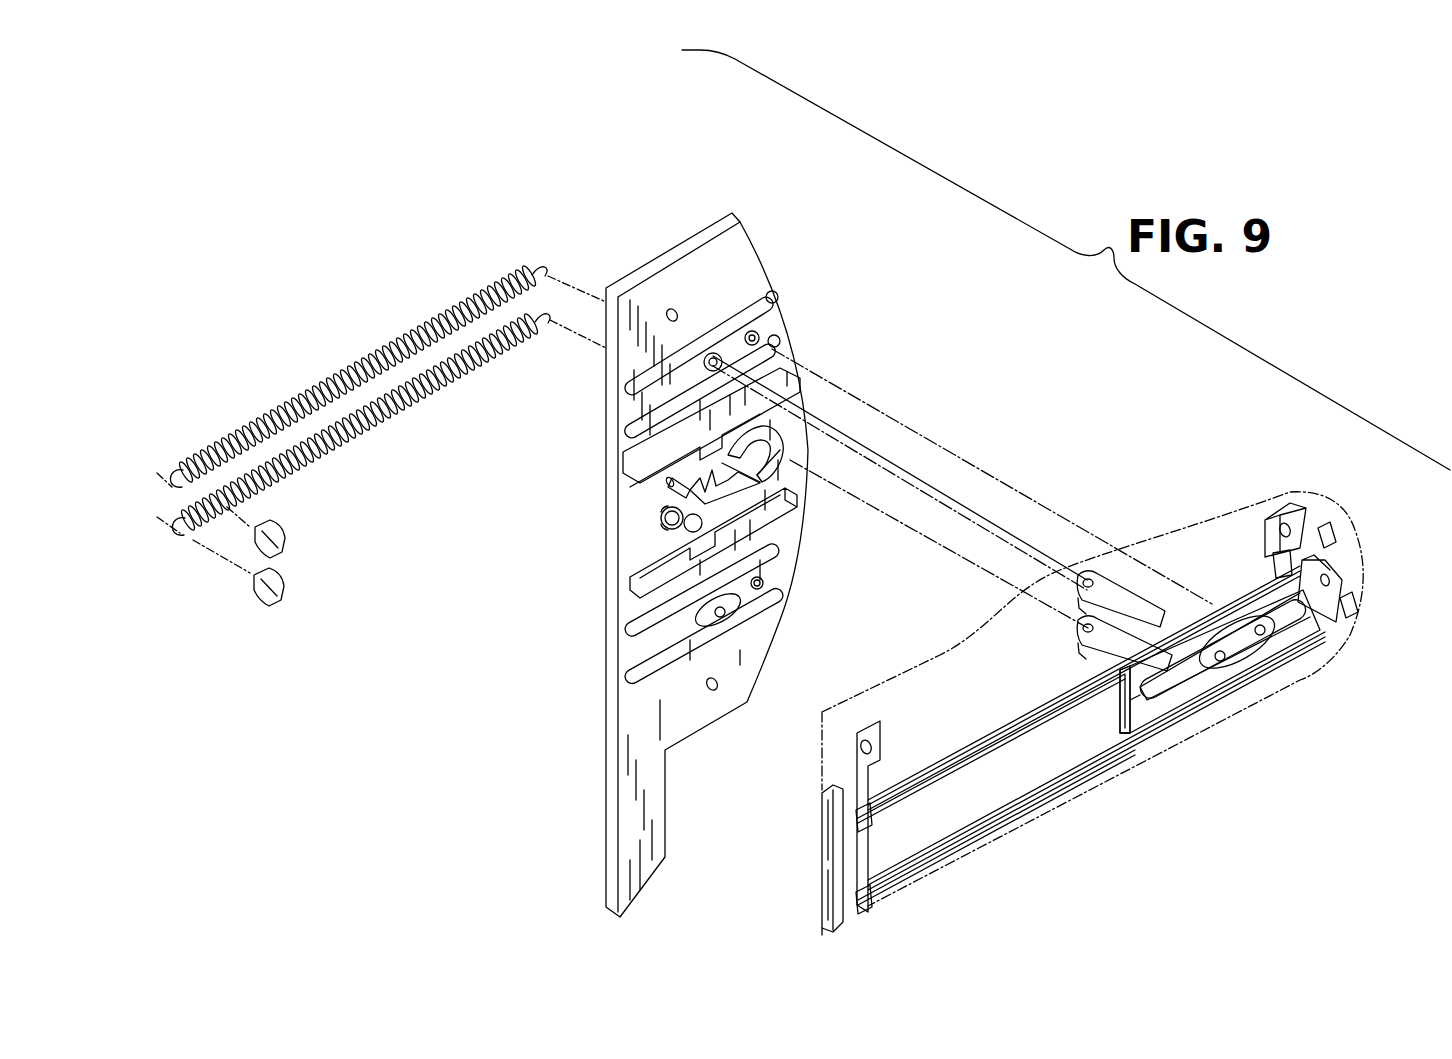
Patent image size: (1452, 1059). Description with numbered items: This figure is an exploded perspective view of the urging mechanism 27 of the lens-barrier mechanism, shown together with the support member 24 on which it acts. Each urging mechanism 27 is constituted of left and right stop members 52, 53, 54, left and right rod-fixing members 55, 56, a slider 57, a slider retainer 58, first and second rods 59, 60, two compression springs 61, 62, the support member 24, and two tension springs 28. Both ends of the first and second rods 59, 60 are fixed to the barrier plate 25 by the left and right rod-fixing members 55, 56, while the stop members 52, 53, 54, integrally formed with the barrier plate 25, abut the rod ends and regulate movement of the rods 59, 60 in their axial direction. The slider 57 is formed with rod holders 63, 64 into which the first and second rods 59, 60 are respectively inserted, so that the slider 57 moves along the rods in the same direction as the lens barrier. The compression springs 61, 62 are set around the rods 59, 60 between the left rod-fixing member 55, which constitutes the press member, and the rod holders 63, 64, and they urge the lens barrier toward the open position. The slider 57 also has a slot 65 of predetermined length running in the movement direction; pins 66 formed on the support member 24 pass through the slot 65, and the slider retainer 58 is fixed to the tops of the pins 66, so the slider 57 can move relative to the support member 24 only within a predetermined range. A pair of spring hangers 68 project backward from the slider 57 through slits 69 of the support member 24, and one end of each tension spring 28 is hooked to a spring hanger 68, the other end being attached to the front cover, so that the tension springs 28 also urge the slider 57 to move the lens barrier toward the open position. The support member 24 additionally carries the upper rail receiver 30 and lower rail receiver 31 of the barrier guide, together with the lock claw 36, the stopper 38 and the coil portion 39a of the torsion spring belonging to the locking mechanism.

The support member 24 is at (766, 249).
The barrier plate 25 is at (1160, 755).
The urging mechanism 27 is at (1187, 572).
The tension spring 28 is at (420, 335).
The upper rail receiver 30 is at (805, 388).
The lower rail receiver 31 is at (800, 505).
The lock claw 36 is at (790, 440).
The stopper 38 is at (672, 498).
The coil portion 39a is at (684, 528).
The stop member 52 is at (822, 812).
The stop member 53 is at (1340, 538).
The stop member 54 is at (1360, 606).
The left rod-fixing member 55 is at (873, 728).
The right rod-fixing member 56 is at (1290, 500).
The slider 57 is at (1118, 706).
The slider retainer 58 is at (1265, 665).
The first rod 59 is at (933, 764).
The second rod 60 is at (1010, 808).
The compression spring 61 is at (982, 728).
The compression spring 62 is at (1070, 788).
The rod holder 63 is at (1270, 540).
The rod holder 64 is at (1320, 635).
The slot 65 is at (1208, 690).
The pin 66 is at (714, 354).
The spring hanger 68 is at (1112, 578).
The slit 69 is at (779, 301).